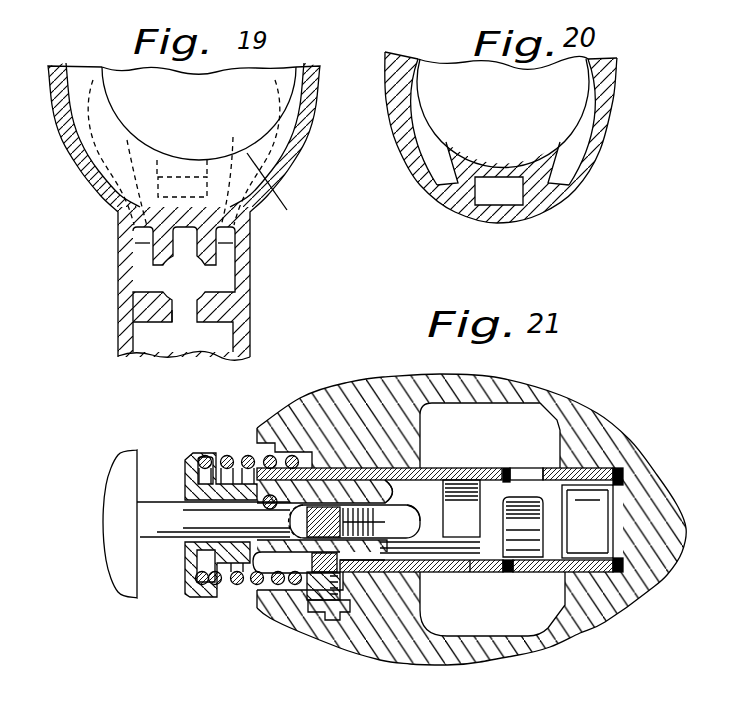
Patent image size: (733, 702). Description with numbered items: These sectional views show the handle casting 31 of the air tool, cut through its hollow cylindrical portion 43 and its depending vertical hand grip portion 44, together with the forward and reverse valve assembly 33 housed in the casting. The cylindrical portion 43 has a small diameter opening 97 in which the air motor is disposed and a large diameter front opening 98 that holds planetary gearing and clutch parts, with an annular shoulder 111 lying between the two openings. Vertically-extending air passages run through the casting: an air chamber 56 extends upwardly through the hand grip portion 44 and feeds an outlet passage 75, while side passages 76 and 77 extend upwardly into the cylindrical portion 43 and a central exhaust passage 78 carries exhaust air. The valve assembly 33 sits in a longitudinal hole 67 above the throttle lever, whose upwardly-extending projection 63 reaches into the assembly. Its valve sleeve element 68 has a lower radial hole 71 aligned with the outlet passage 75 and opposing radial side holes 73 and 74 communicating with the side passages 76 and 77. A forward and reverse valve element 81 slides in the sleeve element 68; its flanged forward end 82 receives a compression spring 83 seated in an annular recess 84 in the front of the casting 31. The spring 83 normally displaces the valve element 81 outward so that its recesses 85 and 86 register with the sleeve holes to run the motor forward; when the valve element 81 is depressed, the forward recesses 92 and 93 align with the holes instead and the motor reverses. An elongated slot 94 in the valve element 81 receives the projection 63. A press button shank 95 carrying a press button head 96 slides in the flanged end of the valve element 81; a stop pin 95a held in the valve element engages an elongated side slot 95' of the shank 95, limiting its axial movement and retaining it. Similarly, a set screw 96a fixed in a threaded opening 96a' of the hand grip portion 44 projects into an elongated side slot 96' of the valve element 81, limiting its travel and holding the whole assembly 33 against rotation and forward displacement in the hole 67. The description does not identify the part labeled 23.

In FIG. 21, the spring retainer 23 is at (267, 488).
In FIG. 19, the handle casting 31 is at (287, 168).
In FIG. 20, the handle casting 31 is at (612, 118).
In FIG. 21, the handle casting 31 is at (632, 607).
In FIG. 21, the forward and reverse valve assembly 33 is at (170, 537).
In FIG. 19, the hollow cylindrical portion 43 is at (80, 148).
In FIG. 20, the hollow cylindrical portion 43 is at (397, 73).
In FIG. 19, the hand grip portion 44 is at (238, 305).
In FIG. 21, the hand grip portion 44 is at (345, 415).
In FIG. 19, the air chamber 56 is at (195, 346).
In FIG. 21, the upwardly-extending projection 63 is at (354, 521).
In FIG. 19, the hole 67 is at (193, 290).
In FIG. 21, the hole 67 is at (395, 567).
In FIG. 21, the valve sleeve element 68 is at (440, 468).
In FIG. 21, the lower radial hole 71 is at (513, 503).
In FIG. 21, the radial side hole 73 is at (525, 566).
In FIG. 21, the radial side hole 74 is at (522, 476).
In FIG. 19, the outlet passage 75 is at (178, 313).
In FIG. 19, the side passage 76 is at (227, 272).
In FIG. 20, the side passage 76 is at (570, 148).
In FIG. 21, the side passage 76 is at (485, 616).
In FIG. 19, the side passage 77 is at (127, 265).
In FIG. 20, the side passage 77 is at (430, 145).
In FIG. 21, the side passage 77 is at (492, 433).
In FIG. 19, the exhaust passage 78 is at (172, 184).
In FIG. 20, the exhaust passage 78 is at (512, 203).
In FIG. 21, the forward and reverse valve element 81 is at (556, 516).
In FIG. 21, the flanged forward end 82 is at (190, 578).
In FIG. 21, the compression spring 83 is at (237, 584).
In FIG. 21, the annular recess 84 is at (263, 590).
In FIG. 21, the recess 85 is at (530, 530).
In FIG. 21, the recess 86 is at (509, 468).
In FIG. 21, the recess 92 is at (473, 563).
In FIG. 21, the recess 93 is at (457, 503).
In FIG. 21, the elongated slot 94 is at (397, 507).
In FIG. 21, the press button shank 95 is at (215, 483).
In FIG. 21, the elongated side slot 95' is at (217, 461).
In FIG. 21, the stop pin 95a is at (238, 483).
In FIG. 21, the press button head 96 is at (98, 524).
In FIG. 21, the elongated side slot 96' is at (267, 614).
In FIG. 21, the set screw 96a is at (318, 627).
In FIG. 21, the threaded opening 96a' is at (349, 647).
In FIG. 19, the small diameter opening 97 is at (185, 121).
In FIG. 20, the small diameter opening 97 is at (505, 113).
In FIG. 19, the large diameter front opening 98 is at (97, 183).
In FIG. 19, the annular shoulder 111 is at (283, 187).